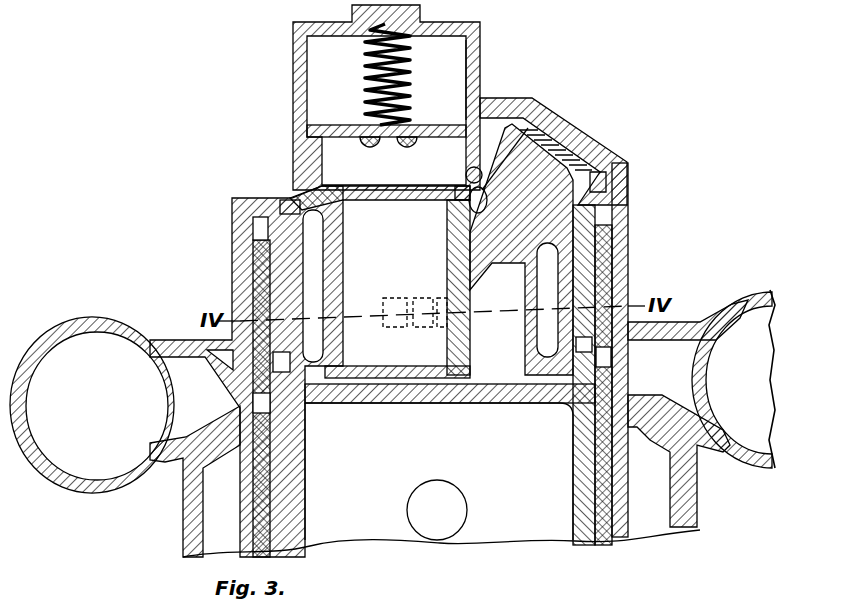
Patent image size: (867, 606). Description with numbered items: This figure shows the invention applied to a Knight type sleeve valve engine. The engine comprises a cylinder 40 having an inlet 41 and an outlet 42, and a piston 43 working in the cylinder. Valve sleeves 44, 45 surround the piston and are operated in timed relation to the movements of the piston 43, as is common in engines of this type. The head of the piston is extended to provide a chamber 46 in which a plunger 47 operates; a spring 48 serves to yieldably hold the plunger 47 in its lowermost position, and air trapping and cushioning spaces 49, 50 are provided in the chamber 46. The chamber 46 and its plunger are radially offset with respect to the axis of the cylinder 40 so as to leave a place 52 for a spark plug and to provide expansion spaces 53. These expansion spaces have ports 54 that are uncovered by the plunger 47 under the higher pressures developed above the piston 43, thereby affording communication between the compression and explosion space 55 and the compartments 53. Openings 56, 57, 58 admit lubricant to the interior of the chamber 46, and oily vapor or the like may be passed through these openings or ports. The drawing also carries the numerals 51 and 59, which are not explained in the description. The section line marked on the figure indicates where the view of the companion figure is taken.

The cylinder 40 is at (628, 198).
The inlet 41 is at (125, 437).
The outlet 42 is at (701, 408).
The piston 43 is at (503, 403).
The valve sleeve 44 is at (590, 545).
The valve sleeve 45 is at (608, 545).
The chamber 46 is at (293, 77).
The plunger 47 is at (318, 157).
The spring 48 is at (403, 65).
The air trapping and cushioning space 49 is at (471, 68).
The air trapping and cushioning space 50 is at (466, 186).
The valve member 51 is at (488, 192).
The place for a spark plug 52 is at (562, 130).
The expansion space 53 is at (548, 284).
The port 54 is at (427, 300).
The compression and explosion space 55 is at (392, 403).
The lubricant opening 56 is at (486, 98).
The lubricant opening 57 is at (305, 121).
The lubricant opening 58 is at (304, 194).
The joint 59 is at (286, 200).